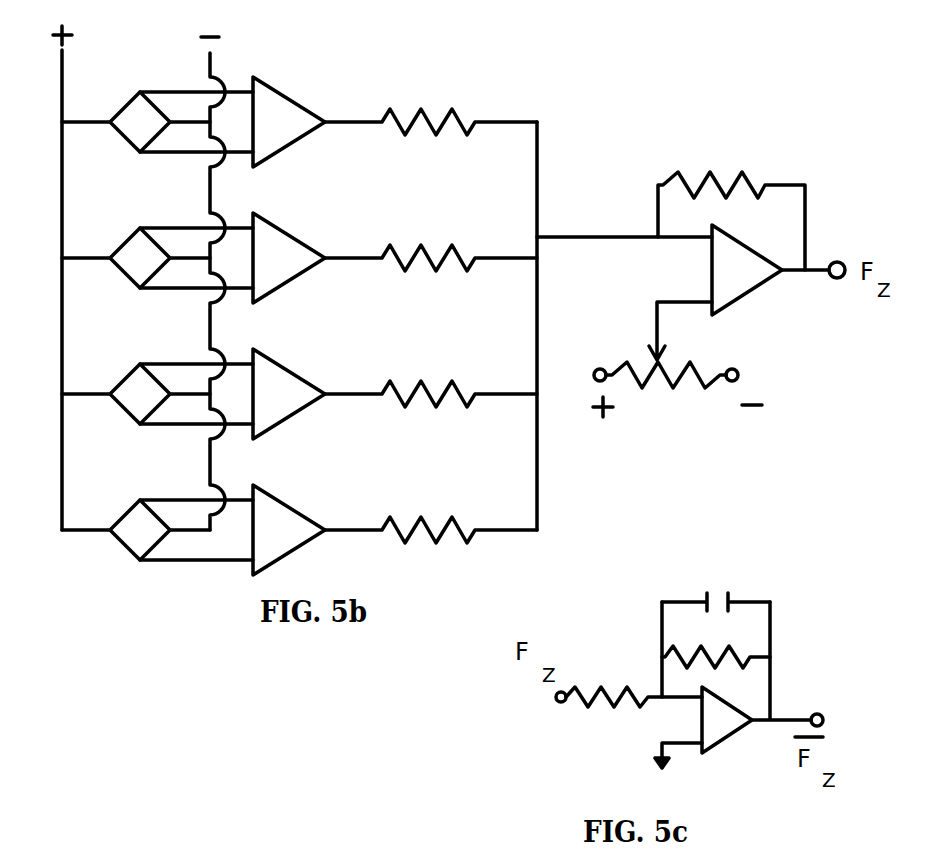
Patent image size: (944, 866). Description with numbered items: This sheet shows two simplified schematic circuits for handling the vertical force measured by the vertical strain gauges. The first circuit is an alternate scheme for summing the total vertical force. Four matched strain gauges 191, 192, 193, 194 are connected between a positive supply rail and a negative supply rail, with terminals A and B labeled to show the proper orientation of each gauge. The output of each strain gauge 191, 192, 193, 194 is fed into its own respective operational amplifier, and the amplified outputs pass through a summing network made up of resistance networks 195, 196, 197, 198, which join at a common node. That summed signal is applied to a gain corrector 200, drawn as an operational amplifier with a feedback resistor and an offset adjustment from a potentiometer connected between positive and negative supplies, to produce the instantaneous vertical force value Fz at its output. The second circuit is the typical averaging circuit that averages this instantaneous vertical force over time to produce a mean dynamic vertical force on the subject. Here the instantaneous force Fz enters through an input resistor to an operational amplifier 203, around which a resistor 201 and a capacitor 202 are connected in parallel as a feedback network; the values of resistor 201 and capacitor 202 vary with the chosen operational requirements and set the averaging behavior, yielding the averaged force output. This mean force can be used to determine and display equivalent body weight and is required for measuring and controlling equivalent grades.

In FIG. 5b, the strain gauge 191 is at (124, 106).
In FIG. 5b, the strain gauge 192 is at (124, 242).
In FIG. 5b, the strain gauge 193 is at (124, 378).
In FIG. 5b, the strain gauge 194 is at (124, 514).
In FIG. 5b, the resistance network 195 is at (298, 105).
In FIG. 5b, the resistance network 196 is at (298, 241).
In FIG. 5b, the resistance network 197 is at (298, 377).
In FIG. 5b, the resistance network 198 is at (298, 513).
In FIG. 5b, the gain corrector 200 is at (807, 183).
In FIG. 5c, the resistor 201 is at (698, 649).
In FIG. 5c, the capacitor 202 is at (707, 604).
In FIG. 5c, the operational amplifier 203 is at (735, 732).